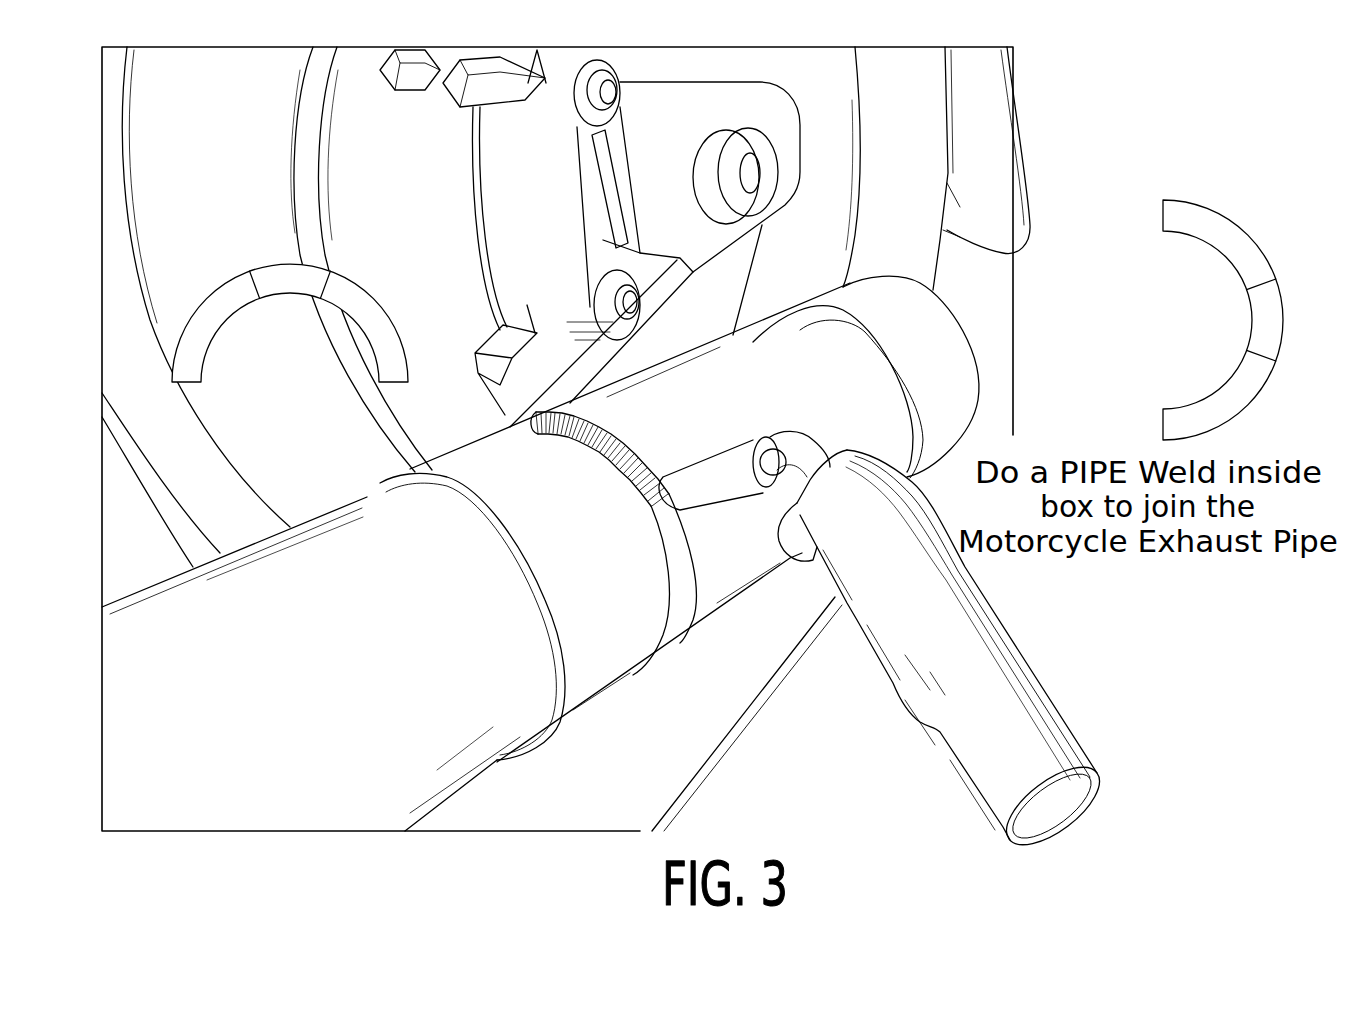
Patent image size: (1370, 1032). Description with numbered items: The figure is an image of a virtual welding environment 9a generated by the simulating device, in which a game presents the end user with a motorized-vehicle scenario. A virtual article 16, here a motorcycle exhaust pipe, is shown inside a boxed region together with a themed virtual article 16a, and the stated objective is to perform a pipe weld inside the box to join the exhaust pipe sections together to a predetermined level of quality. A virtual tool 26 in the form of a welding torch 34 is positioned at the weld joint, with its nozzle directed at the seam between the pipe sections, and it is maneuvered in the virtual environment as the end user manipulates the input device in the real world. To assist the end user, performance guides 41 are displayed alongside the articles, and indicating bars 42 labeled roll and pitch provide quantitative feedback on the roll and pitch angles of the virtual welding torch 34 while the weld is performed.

The virtual article 16 is at (228, 699).
The themed virtual article 16a is at (337, 737).
The welding environment 9a is at (1252, 766).
The virtual tool 26 is at (1020, 725).
The welding torch 34 is at (1018, 672).
The performance guide 41 is at (291, 405).
The indicating bar 42 is at (207, 312).